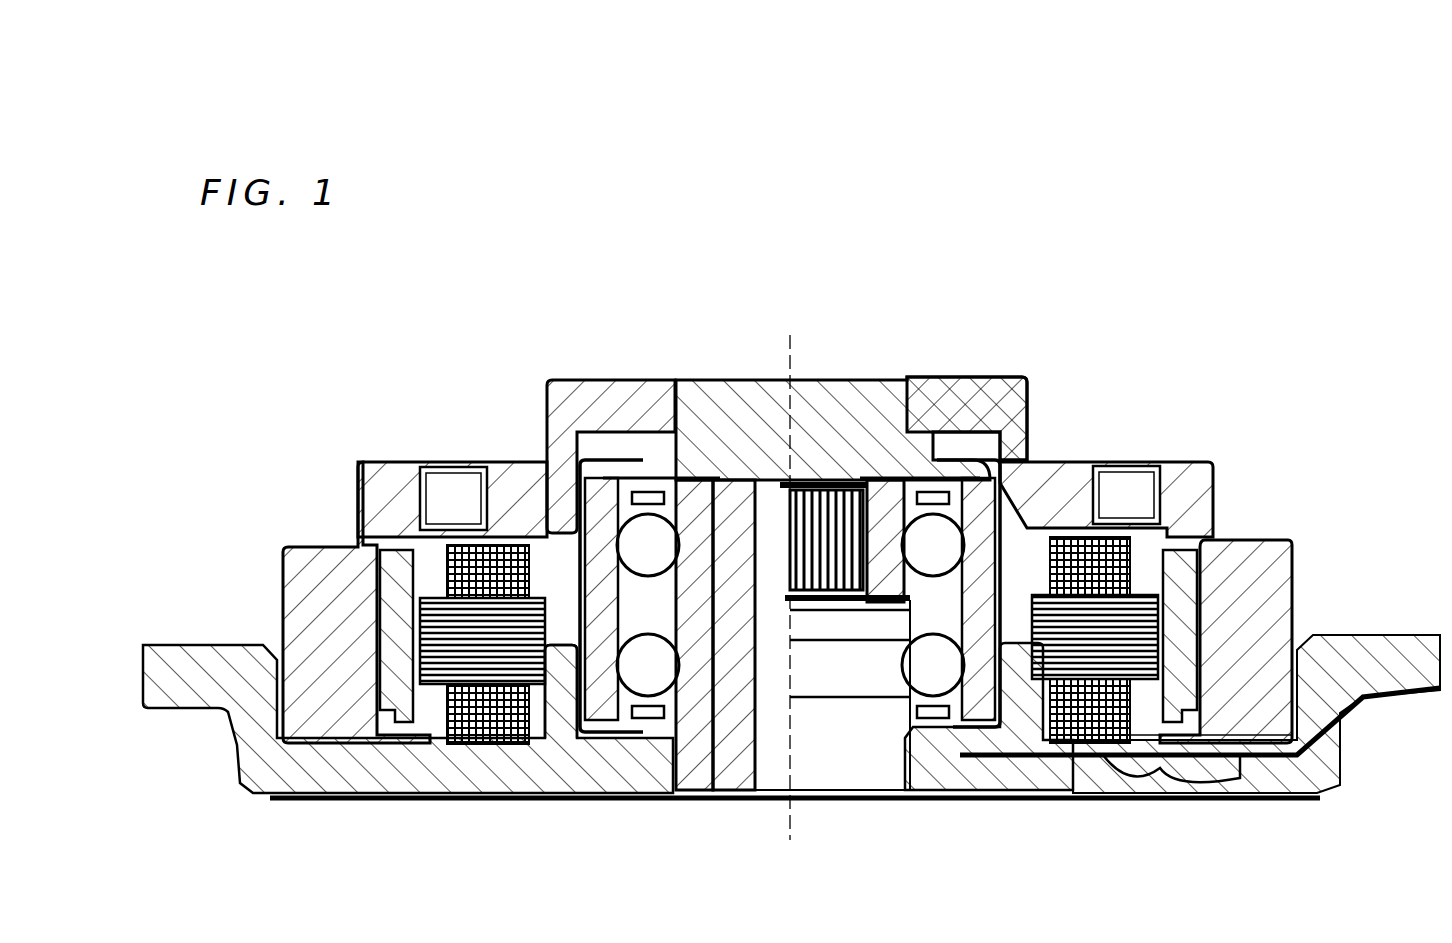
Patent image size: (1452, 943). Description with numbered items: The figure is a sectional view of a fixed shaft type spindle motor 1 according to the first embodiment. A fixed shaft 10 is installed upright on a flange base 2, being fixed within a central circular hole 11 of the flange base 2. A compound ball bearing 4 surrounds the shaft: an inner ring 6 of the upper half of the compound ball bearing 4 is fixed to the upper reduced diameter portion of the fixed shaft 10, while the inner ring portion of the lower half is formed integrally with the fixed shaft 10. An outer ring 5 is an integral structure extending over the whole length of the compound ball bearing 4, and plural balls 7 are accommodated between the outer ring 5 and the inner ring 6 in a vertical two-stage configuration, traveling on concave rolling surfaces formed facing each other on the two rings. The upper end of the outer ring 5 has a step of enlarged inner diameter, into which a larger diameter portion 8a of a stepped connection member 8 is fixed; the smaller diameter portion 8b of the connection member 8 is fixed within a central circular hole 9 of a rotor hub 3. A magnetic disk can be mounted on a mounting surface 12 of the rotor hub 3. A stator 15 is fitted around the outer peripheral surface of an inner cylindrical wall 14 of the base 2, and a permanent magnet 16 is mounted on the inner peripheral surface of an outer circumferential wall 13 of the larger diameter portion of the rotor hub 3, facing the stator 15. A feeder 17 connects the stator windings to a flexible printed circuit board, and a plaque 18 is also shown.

The fixed shaft type spindle motor 1 is at (944, 258).
The flange base 2 is at (247, 793).
The rotor hub 3 is at (355, 479).
The compound ball bearing 4 is at (598, 378).
The outer ring 5 is at (580, 557).
The inner ring 6 is at (790, 475).
The balls 7 is at (645, 680).
The stepped connection member 8 is at (847, 378).
The larger diameter portion 8a is at (967, 453).
The smaller diameter portion 8b is at (887, 377).
The central circular hole 9 is at (707, 478).
The fixed shaft 10 is at (697, 747).
The central circular hole 11 is at (903, 750).
The mounting surface 12 is at (1186, 458).
The outer circumferential wall 13 is at (300, 590).
The inner cylindrical wall 14 is at (557, 710).
The stator 15 is at (477, 752).
The permanent magnet 16 is at (393, 703).
The feeder 17 is at (1160, 797).
The plaque 18 is at (1020, 800).